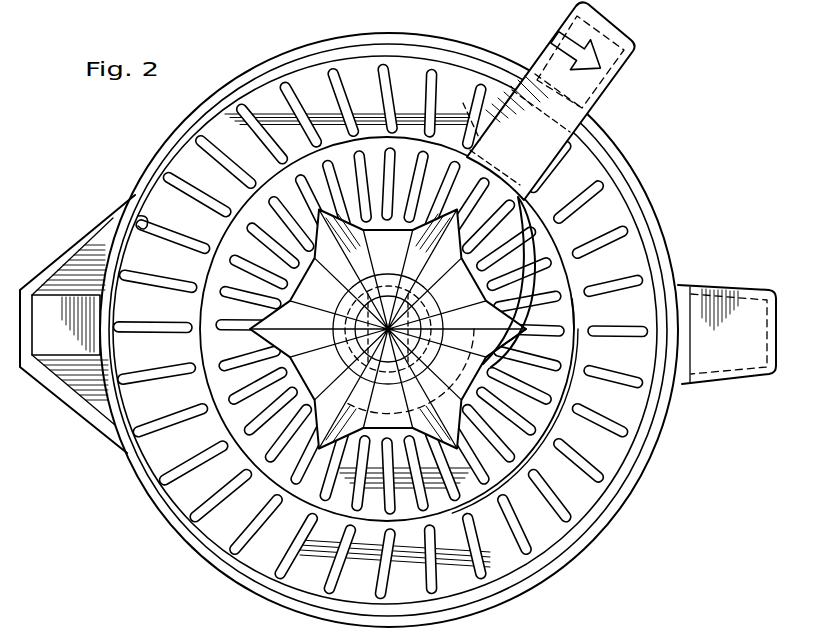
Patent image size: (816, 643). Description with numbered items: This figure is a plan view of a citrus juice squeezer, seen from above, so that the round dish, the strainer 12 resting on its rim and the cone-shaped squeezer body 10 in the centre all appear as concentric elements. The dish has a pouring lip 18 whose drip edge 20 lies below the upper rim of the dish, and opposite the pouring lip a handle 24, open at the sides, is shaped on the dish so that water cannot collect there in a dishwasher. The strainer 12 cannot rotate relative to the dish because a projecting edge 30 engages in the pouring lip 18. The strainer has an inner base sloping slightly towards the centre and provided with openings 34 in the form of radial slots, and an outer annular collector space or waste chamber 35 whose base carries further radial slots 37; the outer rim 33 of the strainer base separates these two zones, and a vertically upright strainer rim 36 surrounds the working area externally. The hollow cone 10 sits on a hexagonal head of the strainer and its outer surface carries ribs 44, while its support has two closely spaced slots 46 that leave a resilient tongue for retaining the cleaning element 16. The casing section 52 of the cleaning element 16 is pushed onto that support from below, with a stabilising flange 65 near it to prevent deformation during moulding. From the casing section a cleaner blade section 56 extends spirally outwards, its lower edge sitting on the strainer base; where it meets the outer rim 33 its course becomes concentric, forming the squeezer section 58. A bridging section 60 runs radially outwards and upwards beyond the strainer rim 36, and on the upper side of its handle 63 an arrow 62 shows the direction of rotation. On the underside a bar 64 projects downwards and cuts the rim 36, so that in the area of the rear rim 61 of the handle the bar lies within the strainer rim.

The squeezer body 10 is at (543, 248).
The strainer 12 is at (631, 258).
The cleaning element 16 is at (451, 283).
The pouring lip 18 is at (50, 397).
The drip edge 20 is at (22, 335).
The handle 24 is at (735, 365).
The projecting edge 30 is at (143, 220).
The outer rim 33 is at (565, 420).
The openings 34 is at (240, 288).
The waste chamber 35 is at (287, 552).
The strainer rim 36 is at (651, 200).
The radial slots 37 is at (603, 378).
The ribs 44 is at (213, 356).
The slots 46 is at (355, 302).
The casing section 52 is at (522, 328).
The cleaner blade section 56 is at (576, 313).
The squeezer section 58 is at (463, 103).
The bridging section 60 is at (528, 175).
The rear rim 61 is at (505, 97).
The arrow 62 is at (588, 60).
The handle 63 is at (608, 45).
The bar 64 is at (530, 77).
The stabilising flange 65 is at (447, 366).